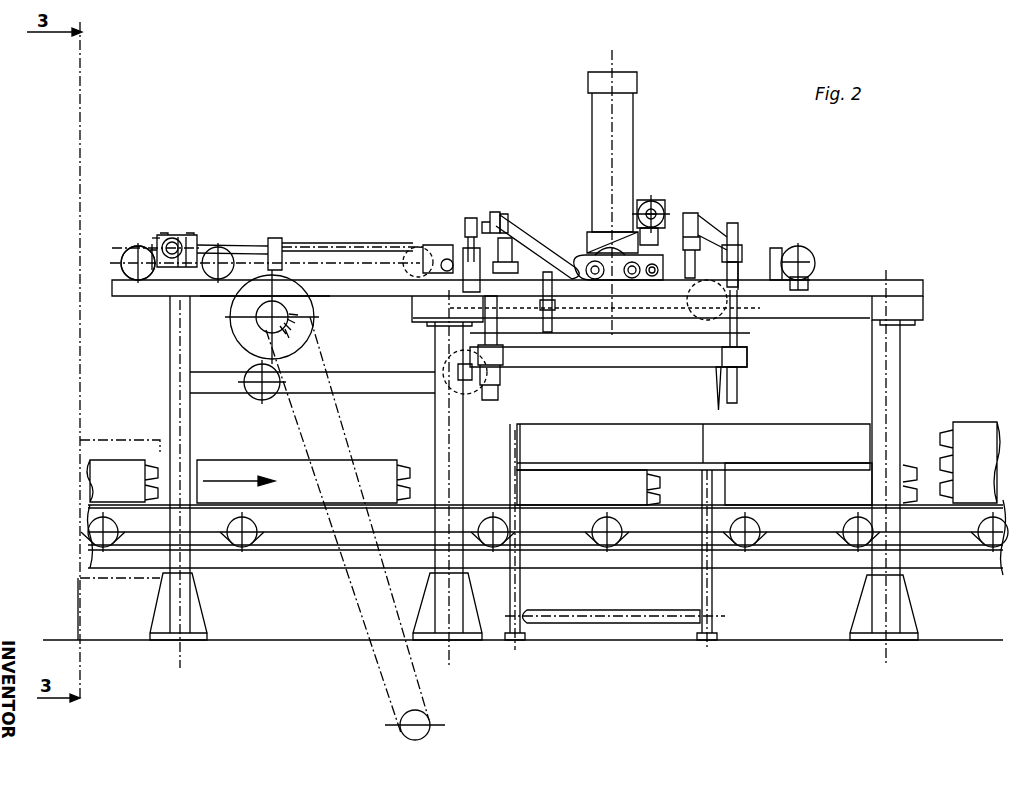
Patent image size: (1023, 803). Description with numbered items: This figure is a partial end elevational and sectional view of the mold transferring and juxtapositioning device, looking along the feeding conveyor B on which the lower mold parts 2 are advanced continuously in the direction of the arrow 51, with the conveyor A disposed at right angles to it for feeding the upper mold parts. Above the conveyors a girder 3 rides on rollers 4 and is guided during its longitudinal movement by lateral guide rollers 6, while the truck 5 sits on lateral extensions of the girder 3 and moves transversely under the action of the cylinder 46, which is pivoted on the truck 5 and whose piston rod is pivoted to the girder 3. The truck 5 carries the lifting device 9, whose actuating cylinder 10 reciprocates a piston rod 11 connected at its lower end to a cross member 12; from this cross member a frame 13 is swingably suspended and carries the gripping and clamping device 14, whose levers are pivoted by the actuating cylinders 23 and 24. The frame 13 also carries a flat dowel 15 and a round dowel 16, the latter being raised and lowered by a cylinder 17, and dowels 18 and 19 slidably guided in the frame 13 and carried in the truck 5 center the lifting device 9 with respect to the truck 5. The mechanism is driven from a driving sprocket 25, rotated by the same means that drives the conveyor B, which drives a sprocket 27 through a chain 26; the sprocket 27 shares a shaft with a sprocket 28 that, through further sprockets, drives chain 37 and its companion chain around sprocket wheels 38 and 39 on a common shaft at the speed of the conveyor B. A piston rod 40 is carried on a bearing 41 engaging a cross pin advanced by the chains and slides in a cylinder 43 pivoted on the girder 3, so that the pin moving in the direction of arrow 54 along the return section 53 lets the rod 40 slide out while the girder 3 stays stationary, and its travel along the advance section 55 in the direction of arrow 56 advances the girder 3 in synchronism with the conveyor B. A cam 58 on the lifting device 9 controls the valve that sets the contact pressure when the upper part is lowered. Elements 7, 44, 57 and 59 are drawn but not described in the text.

The lower mold part 2 is at (103, 483).
The girder 3 is at (770, 260).
The rollers 4 is at (663, 198).
The truck 5 is at (523, 233).
The lateral guide rollers 6 is at (413, 250).
The pin 7 is at (493, 224).
The lifting device 9 is at (608, 312).
The actuating cylinder 10 is at (622, 152).
The piston rod 11 is at (591, 226).
The cross member 12 is at (599, 318).
The swinging frame 13 is at (740, 355).
The gripping and clamping device 14 is at (471, 378).
The flat dowel element 15 is at (718, 380).
The round dowel element 16 is at (516, 422).
The cylinder 17 is at (500, 300).
The dowel 18 is at (757, 174).
The dowel 19 is at (498, 213).
The actuating cylinder 23 is at (433, 247).
The actuating cylinder 24 is at (707, 297).
The driving sprocket 25 is at (422, 728).
The chain 26 is at (393, 706).
The sprocket 27 is at (286, 266).
The sprocket 28 is at (262, 297).
The chain 37 is at (157, 240).
The sprocket wheel 38 is at (128, 248).
The sprocket wheel 39 is at (118, 245).
The piston rod 40 is at (240, 252).
The bearing 41 is at (170, 236).
The cylinder 43 is at (343, 243).
The guide 44 is at (465, 262).
The cylinder 46 is at (668, 220).
The arrow 51 is at (252, 542).
The return section 53 is at (195, 282).
The arrow 54 is at (160, 286).
The advance section 55 is at (152, 237).
The arrow 56 is at (182, 237).
The tool 57 is at (507, 387).
The cam 58 is at (558, 305).
The roller 59 is at (273, 333).
The conveyor A is at (712, 512).
The feeding conveyor B is at (306, 520).